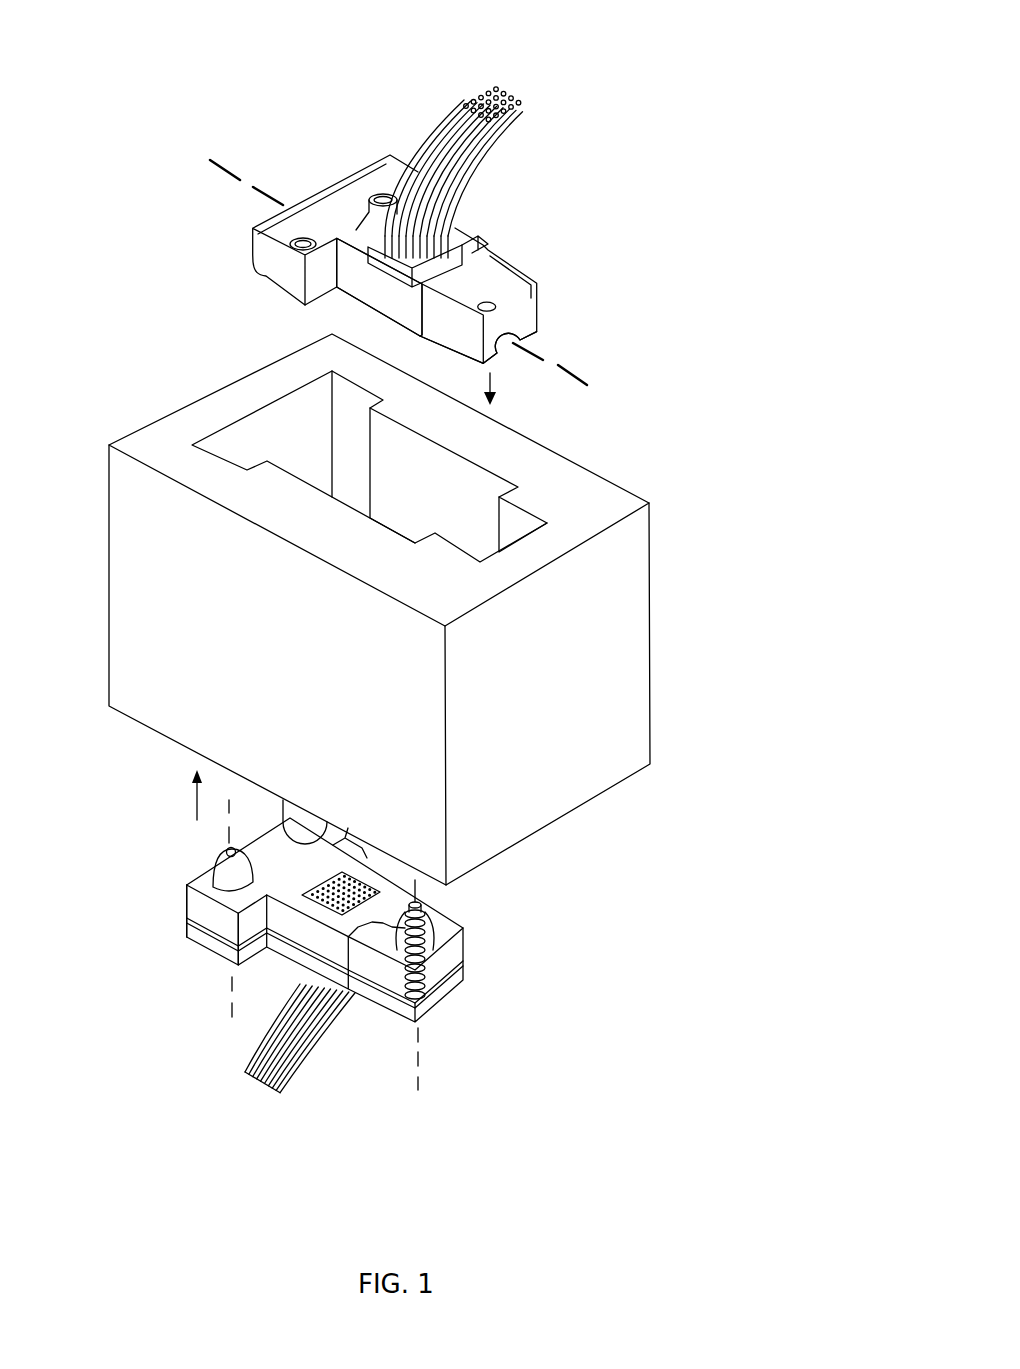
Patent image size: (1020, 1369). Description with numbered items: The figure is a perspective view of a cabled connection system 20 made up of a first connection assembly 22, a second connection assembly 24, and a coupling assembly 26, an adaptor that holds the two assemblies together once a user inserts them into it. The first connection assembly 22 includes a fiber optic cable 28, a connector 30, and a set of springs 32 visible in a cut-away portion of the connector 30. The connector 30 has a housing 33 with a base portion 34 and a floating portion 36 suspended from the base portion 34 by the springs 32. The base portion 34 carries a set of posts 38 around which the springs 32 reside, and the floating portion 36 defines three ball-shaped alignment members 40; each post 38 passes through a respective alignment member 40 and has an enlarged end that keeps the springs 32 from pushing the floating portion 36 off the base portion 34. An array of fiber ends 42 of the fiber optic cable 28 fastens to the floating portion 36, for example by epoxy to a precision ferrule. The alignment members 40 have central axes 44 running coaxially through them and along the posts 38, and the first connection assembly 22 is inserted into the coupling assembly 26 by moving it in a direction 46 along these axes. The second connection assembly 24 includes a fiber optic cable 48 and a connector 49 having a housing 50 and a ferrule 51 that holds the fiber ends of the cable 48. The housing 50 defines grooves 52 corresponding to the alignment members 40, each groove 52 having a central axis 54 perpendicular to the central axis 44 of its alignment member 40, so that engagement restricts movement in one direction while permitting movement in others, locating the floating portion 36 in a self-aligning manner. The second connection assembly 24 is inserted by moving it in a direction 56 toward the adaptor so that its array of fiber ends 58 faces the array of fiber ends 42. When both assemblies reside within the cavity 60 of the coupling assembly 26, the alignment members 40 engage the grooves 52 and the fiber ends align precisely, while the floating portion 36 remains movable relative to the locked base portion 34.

The connection system 20 is at (843, 47).
The first connection assembly 22 is at (130, 1029).
The second connection assembly 24 is at (283, 138).
The coupling assembly 26 is at (415, 609).
The fiber optic cable 28 is at (294, 1070).
The connector 30 is at (381, 1004).
The springs 32 is at (417, 993).
The housing 33 is at (172, 938).
The base portion 34 is at (462, 983).
The floating portion 36 is at (215, 915).
The posts 38 is at (410, 897).
The ball-shaped alignment members 40 is at (223, 868).
The array of fiber ends 42 is at (317, 1015).
The central axes 44 is at (233, 1022).
The direction 46 is at (197, 792).
The fiber optic cable 48 is at (468, 180).
The connector 49 is at (394, 259).
The housing 50 is at (360, 275).
The ferrule 51 is at (458, 260).
The grooves 52 is at (532, 333).
The central axis 54 is at (576, 374).
The direction 56 is at (490, 380).
The array of fiber ends 58 is at (357, 321).
The cavity 60 is at (369, 466).